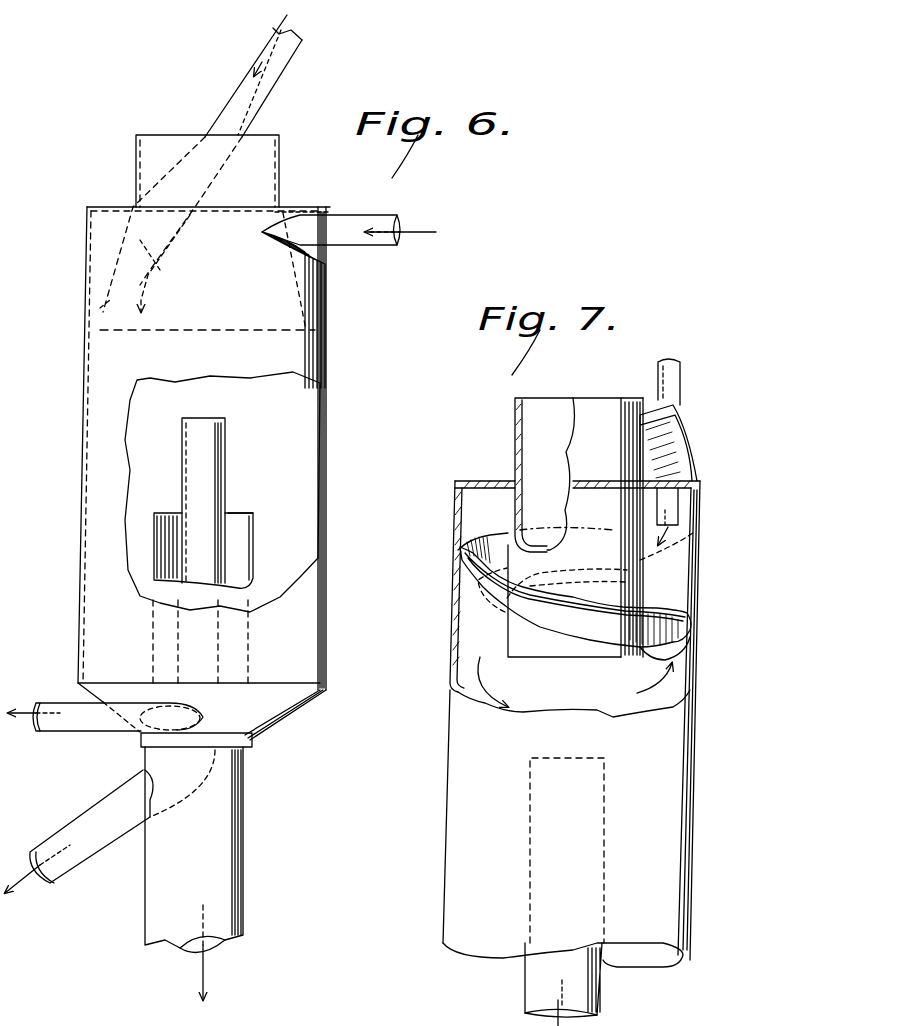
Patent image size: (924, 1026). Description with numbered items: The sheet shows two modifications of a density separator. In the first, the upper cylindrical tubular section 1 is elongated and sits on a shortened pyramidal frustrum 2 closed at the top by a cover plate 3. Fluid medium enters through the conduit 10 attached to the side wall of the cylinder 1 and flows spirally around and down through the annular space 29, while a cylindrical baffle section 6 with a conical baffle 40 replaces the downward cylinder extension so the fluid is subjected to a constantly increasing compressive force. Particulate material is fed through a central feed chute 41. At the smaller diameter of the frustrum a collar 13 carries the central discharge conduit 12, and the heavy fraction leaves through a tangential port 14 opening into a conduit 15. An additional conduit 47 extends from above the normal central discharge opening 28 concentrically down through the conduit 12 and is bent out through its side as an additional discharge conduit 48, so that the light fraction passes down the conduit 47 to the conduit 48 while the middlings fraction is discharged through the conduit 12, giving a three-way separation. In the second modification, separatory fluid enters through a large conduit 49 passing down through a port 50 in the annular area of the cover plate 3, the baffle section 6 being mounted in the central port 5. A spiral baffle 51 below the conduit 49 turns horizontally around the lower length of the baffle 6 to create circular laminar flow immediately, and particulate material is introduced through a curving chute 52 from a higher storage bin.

In FIG. 6, the cylinder 1 is at (85, 551).
In FIG. 7, the cylinder 1 is at (697, 714).
In FIG. 6, the pyramidal frustrum 2 is at (278, 713).
In FIG. 6, the cover plate 3 is at (97, 207).
In FIG. 7, the cover plate 3 is at (478, 483).
In FIG. 7, the central port 5 is at (507, 474).
In FIG. 6, the cylindrical baffle section 6 is at (136, 145).
In FIG. 7, the cylindrical baffle section 6 is at (513, 430).
In FIG. 6, the conduit 10 is at (352, 247).
In FIG. 6, the central discharge conduit 12 is at (253, 540).
In FIG. 7, the central discharge conduit 12 is at (525, 988).
In FIG. 6, the collar 13 is at (255, 747).
In FIG. 6, the tangential port 14 is at (152, 725).
In FIG. 6, the conduit 15 is at (50, 728).
In FIG. 6, the central discharge opening 28 is at (238, 513).
In FIG. 6, the annular space 29 is at (108, 255).
In FIG. 6, the conical baffle 40 is at (107, 310).
In FIG. 6, the central feed chute 41 is at (242, 87).
In FIG. 6, the conduit 47 is at (228, 436).
In FIG. 6, the additional discharge conduit 48 is at (62, 878).
In FIG. 7, the conduit 49 is at (684, 367).
In FIG. 7, the port 50 is at (692, 495).
In FIG. 7, the spiral baffle 51 is at (462, 600).
In FIG. 7, the curving chute 52 is at (695, 468).